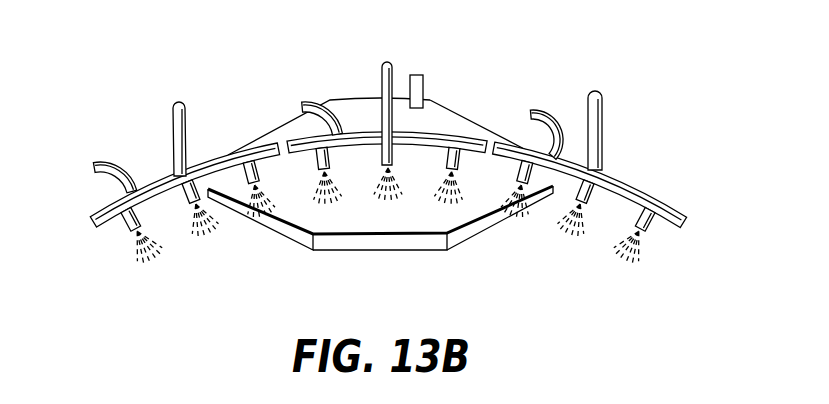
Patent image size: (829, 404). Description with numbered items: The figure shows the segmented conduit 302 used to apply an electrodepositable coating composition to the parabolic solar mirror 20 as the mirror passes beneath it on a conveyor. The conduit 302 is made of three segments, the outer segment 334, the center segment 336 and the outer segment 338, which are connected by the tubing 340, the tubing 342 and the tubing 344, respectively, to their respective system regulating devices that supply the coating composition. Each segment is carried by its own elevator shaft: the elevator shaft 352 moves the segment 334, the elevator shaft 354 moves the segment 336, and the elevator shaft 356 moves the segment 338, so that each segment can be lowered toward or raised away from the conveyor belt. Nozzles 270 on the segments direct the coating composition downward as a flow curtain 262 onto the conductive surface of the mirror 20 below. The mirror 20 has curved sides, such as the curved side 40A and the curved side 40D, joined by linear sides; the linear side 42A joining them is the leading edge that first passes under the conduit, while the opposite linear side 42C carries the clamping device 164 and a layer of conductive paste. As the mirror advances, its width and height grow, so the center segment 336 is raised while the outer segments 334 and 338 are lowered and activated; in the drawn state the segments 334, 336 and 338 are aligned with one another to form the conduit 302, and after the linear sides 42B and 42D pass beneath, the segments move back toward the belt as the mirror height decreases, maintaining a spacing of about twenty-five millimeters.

The parabolic solar mirror 20 is at (257, 268).
The curved side 40A is at (302, 243).
The linear side 42A is at (369, 245).
The curved side 40D is at (480, 228).
The linear side 42B is at (193, 183).
The linear side 42C is at (346, 100).
The linear side 42D is at (580, 178).
The clamping device 164 is at (415, 77).
The flow curtain 262 is at (223, 163).
The nozzles 270 is at (165, 192).
The segmented conduit 302 is at (700, 137).
The outer segment 334 is at (662, 192).
The center segment 336 is at (447, 127).
The outer segment 338 is at (107, 210).
The tubing 340 is at (533, 112).
The tubing 342 is at (305, 122).
The tubing 344 is at (122, 170).
The elevator shaft 352 is at (603, 112).
The elevator shaft 354 is at (382, 75).
The elevator shaft 356 is at (173, 115).